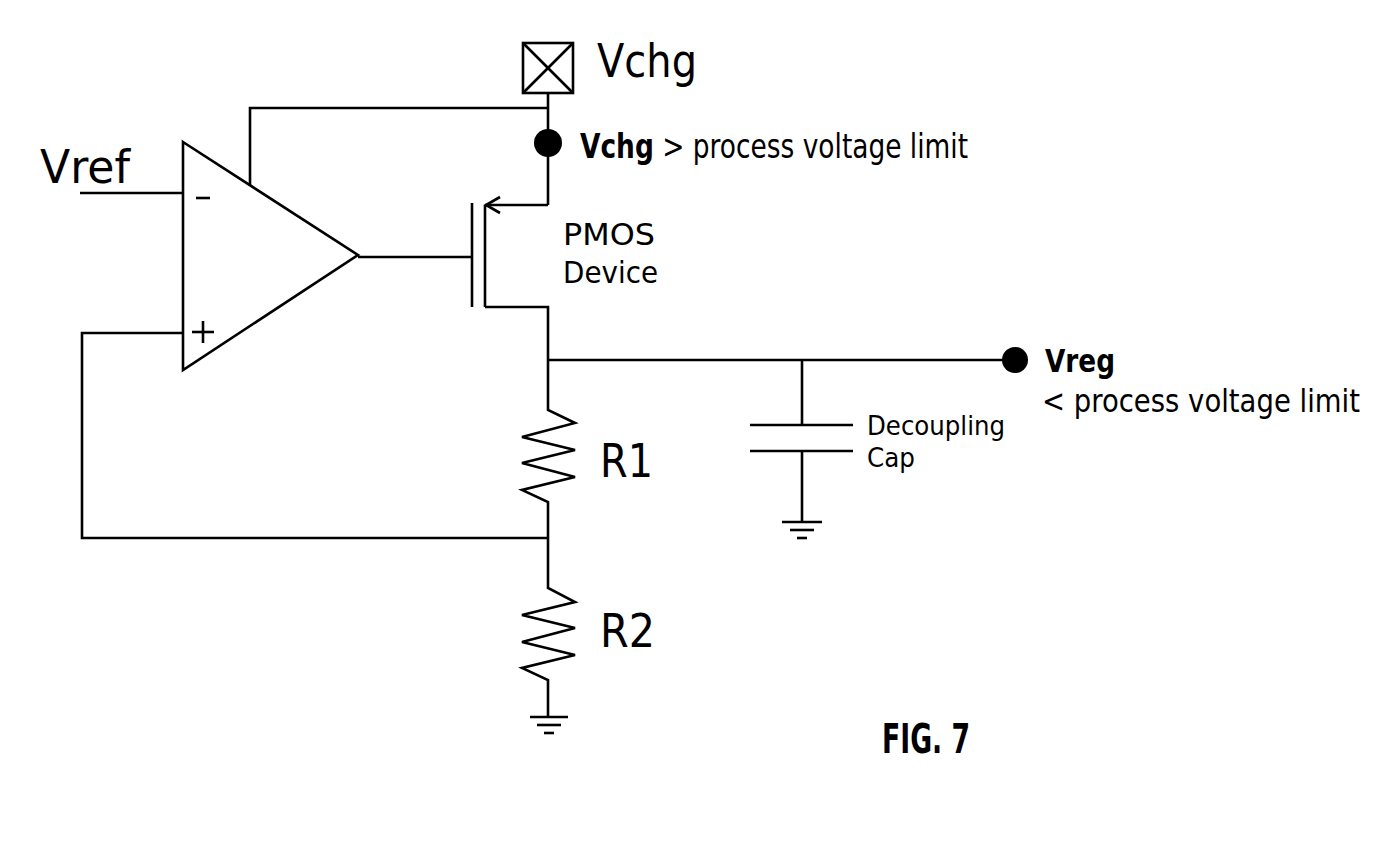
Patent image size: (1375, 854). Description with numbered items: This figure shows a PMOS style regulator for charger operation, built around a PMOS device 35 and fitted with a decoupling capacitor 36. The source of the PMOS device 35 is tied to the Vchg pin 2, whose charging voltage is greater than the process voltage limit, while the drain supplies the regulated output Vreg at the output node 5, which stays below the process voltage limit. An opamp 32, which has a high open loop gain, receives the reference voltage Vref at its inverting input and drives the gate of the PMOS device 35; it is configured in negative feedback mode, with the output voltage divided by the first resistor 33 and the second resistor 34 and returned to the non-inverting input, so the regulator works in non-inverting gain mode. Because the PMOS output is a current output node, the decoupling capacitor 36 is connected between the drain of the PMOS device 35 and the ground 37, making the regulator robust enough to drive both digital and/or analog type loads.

The Vchg pin 2 is at (521, 74).
The regulated voltage node Vreg 5 is at (1012, 347).
The opamp 32 is at (226, 166).
The R1 resistor 33 is at (530, 460).
The R2 resistor 34 is at (528, 637).
The PMOS device 35 is at (468, 290).
The decoupling capacitor 36 is at (778, 423).
The ground 37 is at (806, 545).